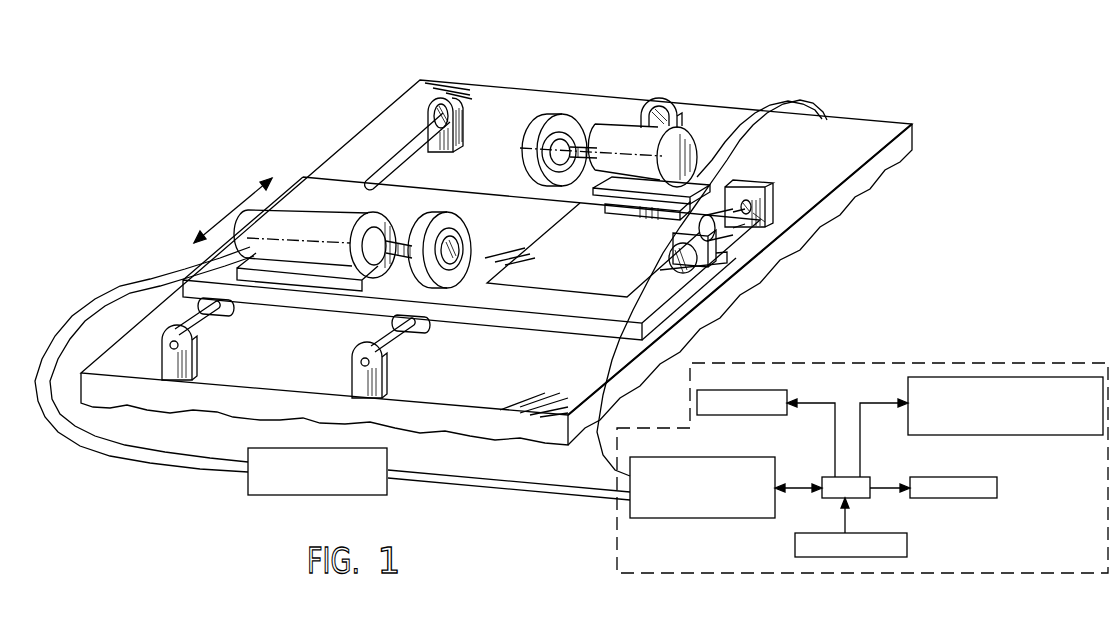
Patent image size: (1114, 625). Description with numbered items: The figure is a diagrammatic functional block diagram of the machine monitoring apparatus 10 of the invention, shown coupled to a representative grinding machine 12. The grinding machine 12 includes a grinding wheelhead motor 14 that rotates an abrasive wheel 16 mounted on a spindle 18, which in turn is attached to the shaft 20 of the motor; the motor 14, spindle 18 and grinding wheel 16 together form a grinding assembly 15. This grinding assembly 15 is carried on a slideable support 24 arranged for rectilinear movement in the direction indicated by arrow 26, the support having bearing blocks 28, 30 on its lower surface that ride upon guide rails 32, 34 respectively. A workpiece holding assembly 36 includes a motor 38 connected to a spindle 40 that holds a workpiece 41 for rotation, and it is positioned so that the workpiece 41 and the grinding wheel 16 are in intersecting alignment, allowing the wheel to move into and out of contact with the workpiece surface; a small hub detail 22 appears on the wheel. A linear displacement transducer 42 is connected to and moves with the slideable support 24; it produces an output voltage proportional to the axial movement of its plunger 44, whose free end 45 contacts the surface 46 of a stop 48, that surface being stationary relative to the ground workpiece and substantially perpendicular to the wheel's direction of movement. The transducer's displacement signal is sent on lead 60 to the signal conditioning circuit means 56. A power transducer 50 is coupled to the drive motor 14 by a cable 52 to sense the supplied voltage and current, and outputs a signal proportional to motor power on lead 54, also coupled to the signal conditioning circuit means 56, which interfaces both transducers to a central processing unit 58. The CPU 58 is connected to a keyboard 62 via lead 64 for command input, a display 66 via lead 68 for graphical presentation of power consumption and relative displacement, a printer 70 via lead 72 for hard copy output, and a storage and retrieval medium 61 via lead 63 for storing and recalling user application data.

The machine monitoring apparatus 10 is at (1003, 341).
The grinding machine 12 is at (545, 58).
The grinding wheelhead motor 14 is at (340, 222).
The grinding assembly 15 is at (325, 186).
The abrasive wheel 16 is at (444, 226).
The spindle 18 is at (438, 236).
The shaft 20 is at (392, 240).
The spindle 22 is at (466, 252).
The slideable support 24 is at (498, 298).
The arrow 26 is at (230, 207).
The bearing block 28 is at (876, 128).
The bearing block 30 is at (394, 330).
The guide rail 32 is at (197, 333).
The guide rail 34 is at (391, 341).
The workpiece holding assembly 36 is at (627, 114).
The motor 38 is at (679, 137).
The spindle 40 is at (573, 148).
The workpiece 41 is at (542, 128).
The linear displacement transducer 42 is at (700, 222).
The plunger 44 is at (520, 168).
The free end 45 is at (768, 214).
The surface 46 is at (752, 200).
The stop 48 is at (742, 186).
The power transducer 50 is at (277, 448).
The cable 52 is at (207, 459).
The lead 54 is at (434, 470).
The signal conditioning circuit means 56 is at (716, 458).
The central processing unit 58 is at (862, 480).
The lead 60 is at (611, 360).
The storage and retrieval medium 61 is at (908, 391).
The keyboard 62 is at (795, 546).
The lead 63 is at (860, 430).
The lead 64 is at (846, 530).
The display 66 is at (959, 498).
The lead 68 is at (890, 490).
The printer 70 is at (764, 392).
The lead 72 is at (835, 433).